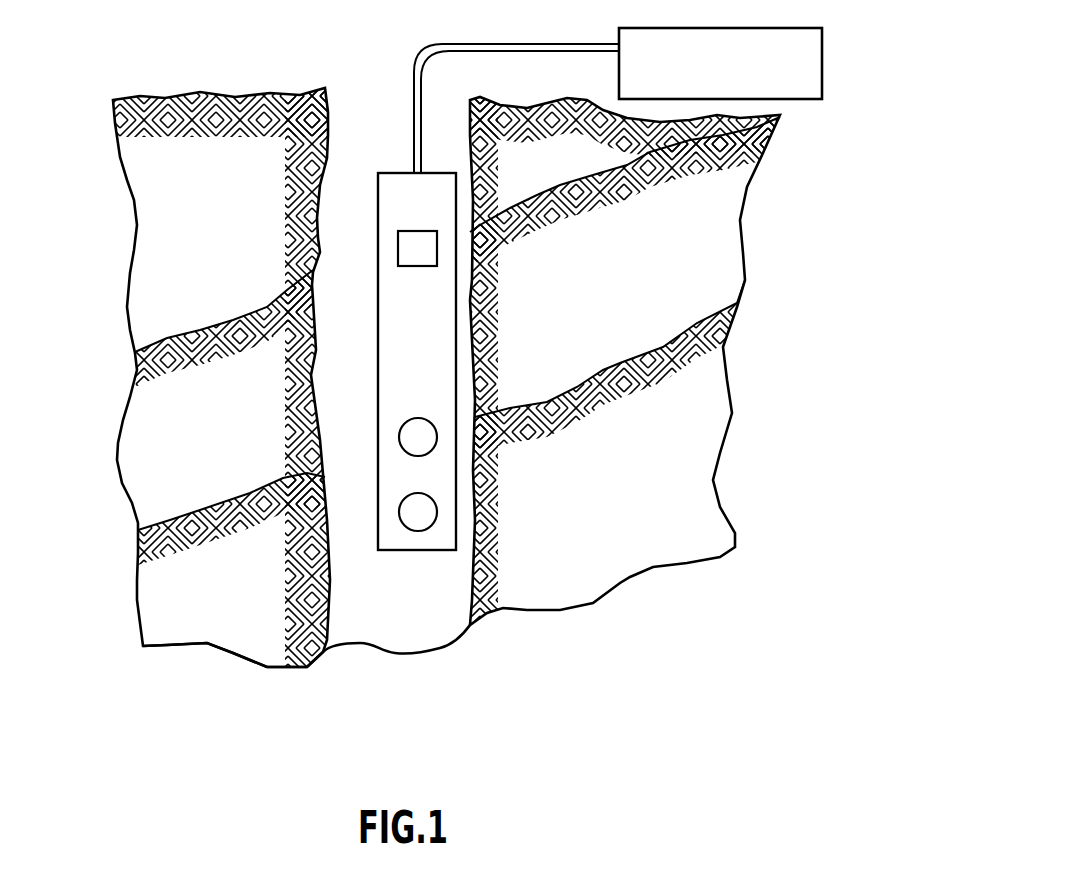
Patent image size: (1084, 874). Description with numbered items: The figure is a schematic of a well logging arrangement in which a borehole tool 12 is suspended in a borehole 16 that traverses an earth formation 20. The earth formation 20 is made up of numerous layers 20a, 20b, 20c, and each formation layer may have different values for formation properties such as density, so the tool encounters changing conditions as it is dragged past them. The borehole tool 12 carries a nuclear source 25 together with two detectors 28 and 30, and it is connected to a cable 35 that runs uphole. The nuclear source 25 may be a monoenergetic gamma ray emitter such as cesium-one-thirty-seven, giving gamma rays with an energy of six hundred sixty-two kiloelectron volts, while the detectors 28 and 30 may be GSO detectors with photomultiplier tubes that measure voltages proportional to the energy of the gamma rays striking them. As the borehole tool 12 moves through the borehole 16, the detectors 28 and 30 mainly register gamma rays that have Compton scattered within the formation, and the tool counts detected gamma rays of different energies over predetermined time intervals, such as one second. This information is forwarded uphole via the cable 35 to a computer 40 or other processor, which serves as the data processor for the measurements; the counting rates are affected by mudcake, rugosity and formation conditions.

The borehole tool 12 is at (432, 552).
The borehole 16 is at (383, 620).
The earth formation 20 is at (108, 300).
The formation layer 20a is at (190, 232).
The formation layer 20b is at (223, 442).
The formation layer 20c is at (253, 605).
The nuclear source 25 is at (398, 248).
The detector 28 is at (437, 440).
The detector 30 is at (437, 515).
The cable 35 is at (414, 66).
The computer 40 is at (822, 93).